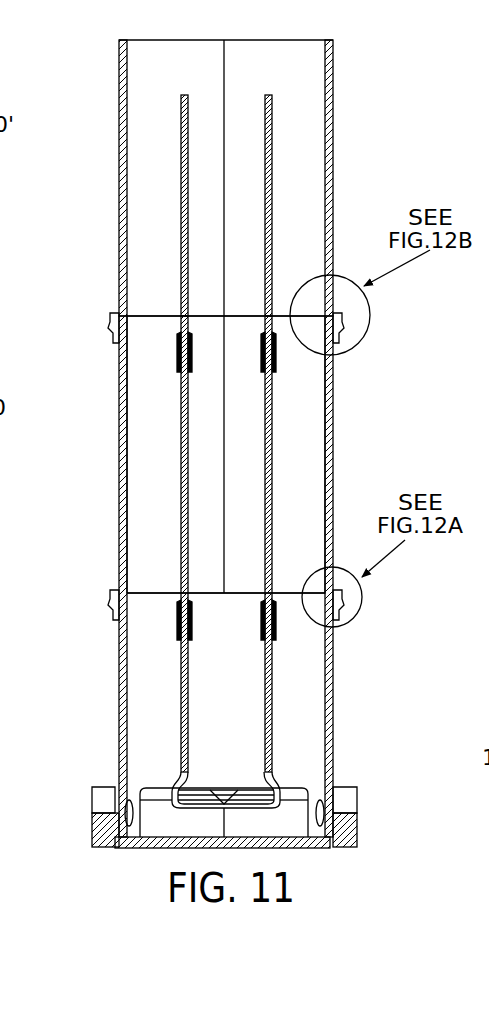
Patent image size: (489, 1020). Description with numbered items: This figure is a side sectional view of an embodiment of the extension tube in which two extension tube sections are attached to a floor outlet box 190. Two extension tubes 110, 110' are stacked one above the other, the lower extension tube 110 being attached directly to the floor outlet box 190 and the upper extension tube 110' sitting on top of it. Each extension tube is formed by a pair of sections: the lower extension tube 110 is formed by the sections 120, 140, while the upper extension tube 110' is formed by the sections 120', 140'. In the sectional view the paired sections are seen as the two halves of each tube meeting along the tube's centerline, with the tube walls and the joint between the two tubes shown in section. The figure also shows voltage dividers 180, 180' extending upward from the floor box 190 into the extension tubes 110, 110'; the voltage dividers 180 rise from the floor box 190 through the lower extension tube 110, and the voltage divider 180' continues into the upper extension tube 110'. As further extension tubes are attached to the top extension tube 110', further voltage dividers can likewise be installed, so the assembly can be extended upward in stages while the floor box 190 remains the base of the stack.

The extension tube 110' is at (294, 178).
The section 120' is at (219, 164).
The section 140' is at (178, 186).
The voltage divider 180' is at (319, 187).
The extension tube 110 is at (283, 576).
The section 120 is at (264, 454).
The section 140 is at (166, 454).
The voltage divider 180 is at (262, 562).
The floor outlet box 190 is at (330, 758).